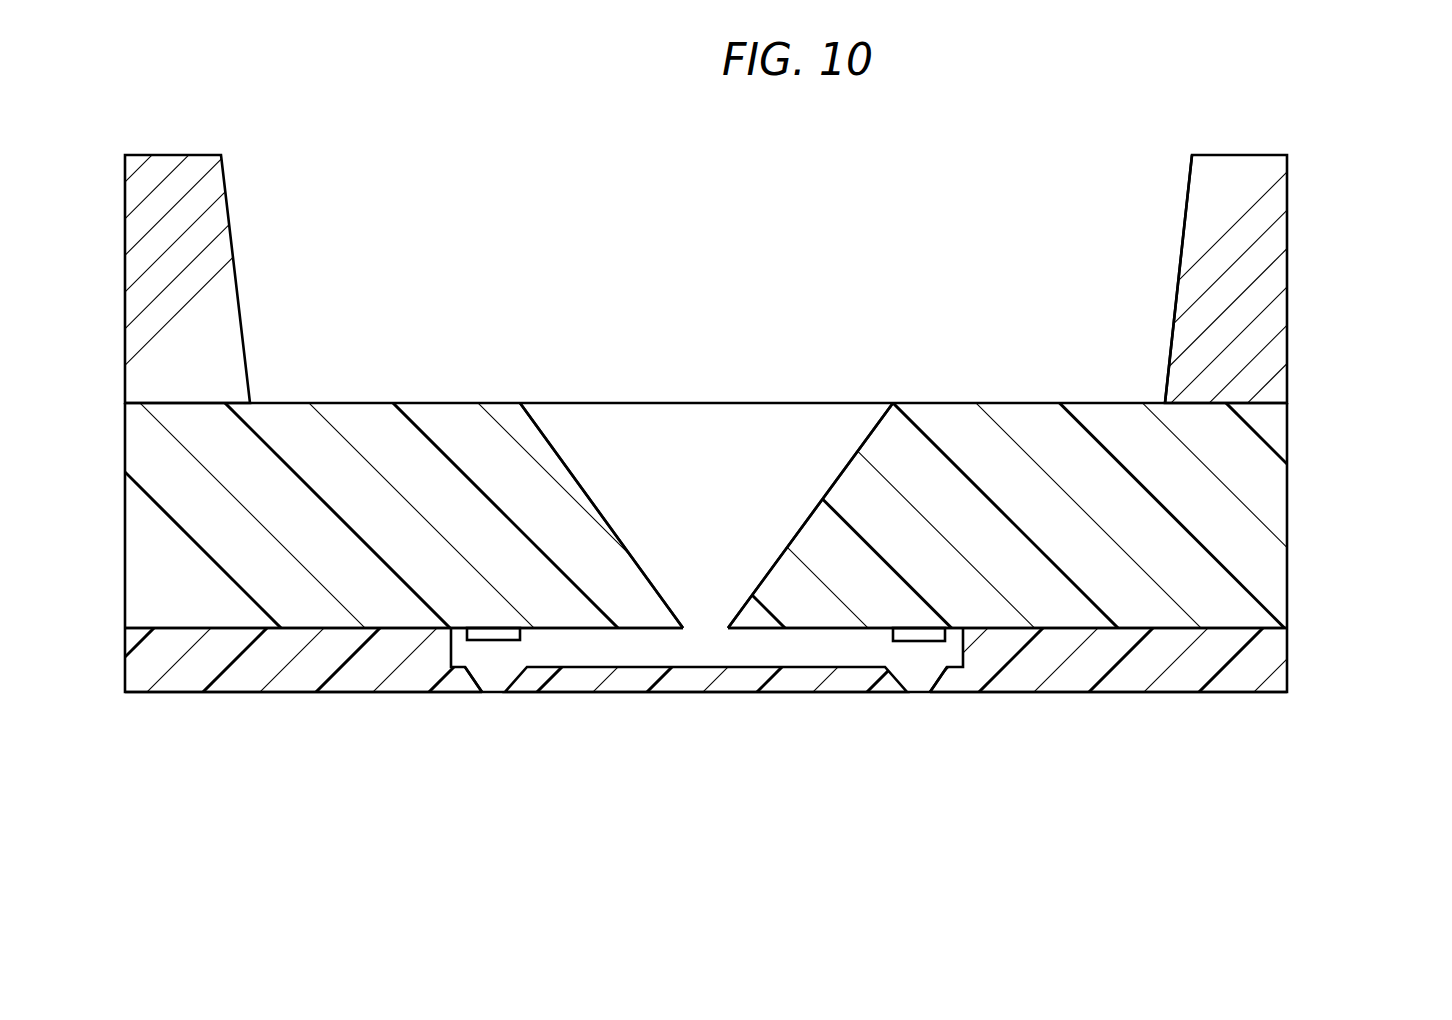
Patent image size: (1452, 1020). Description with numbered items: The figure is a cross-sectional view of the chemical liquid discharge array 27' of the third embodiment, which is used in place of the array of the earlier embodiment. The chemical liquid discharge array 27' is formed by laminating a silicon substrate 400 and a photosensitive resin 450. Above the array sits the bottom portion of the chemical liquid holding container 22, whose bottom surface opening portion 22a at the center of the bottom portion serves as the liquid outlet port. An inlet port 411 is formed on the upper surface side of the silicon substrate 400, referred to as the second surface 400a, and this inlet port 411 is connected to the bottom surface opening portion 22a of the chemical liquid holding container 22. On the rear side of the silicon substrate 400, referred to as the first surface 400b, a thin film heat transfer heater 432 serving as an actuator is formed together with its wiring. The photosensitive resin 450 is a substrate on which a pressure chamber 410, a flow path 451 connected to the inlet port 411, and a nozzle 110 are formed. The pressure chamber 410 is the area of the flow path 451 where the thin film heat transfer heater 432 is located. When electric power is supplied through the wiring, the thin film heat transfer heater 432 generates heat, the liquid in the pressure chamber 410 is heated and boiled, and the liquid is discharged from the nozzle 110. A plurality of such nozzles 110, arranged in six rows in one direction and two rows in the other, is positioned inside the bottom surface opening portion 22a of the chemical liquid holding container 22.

The chemical liquid holding container 22 is at (1272, 217).
The bottom surface opening portion 22a is at (1183, 195).
The silicon substrate 400 is at (1288, 522).
The second surface 400a is at (1113, 403).
The first surface 400b is at (1070, 630).
The inlet port 411 is at (705, 452).
The photosensitive resin 450 is at (1288, 655).
The flow path 451 is at (789, 655).
The thin film heat transfer heater 432 is at (495, 642).
The pressure chamber 410 is at (950, 652).
The nozzle 110 is at (495, 680).
The chemical liquid discharge array 27' is at (1234, 780).